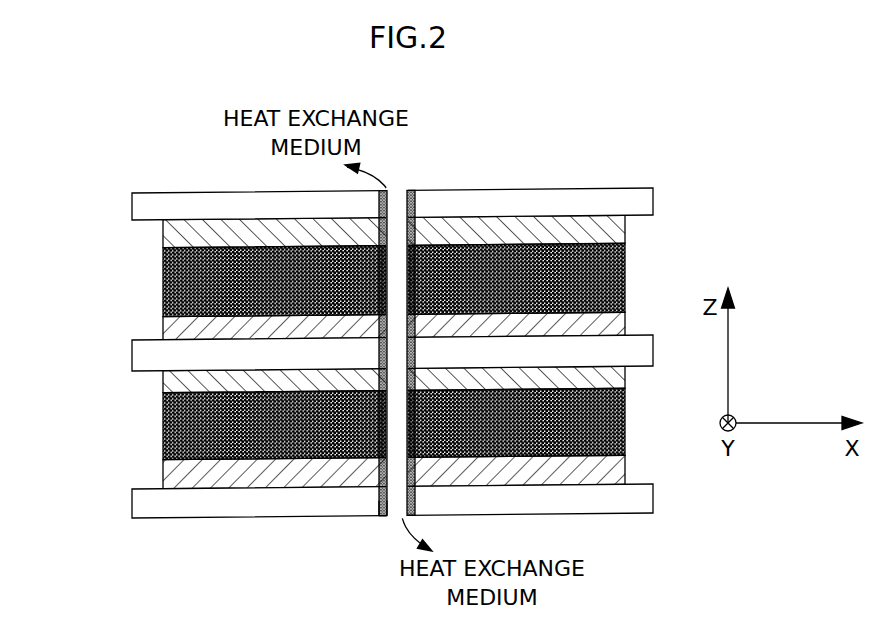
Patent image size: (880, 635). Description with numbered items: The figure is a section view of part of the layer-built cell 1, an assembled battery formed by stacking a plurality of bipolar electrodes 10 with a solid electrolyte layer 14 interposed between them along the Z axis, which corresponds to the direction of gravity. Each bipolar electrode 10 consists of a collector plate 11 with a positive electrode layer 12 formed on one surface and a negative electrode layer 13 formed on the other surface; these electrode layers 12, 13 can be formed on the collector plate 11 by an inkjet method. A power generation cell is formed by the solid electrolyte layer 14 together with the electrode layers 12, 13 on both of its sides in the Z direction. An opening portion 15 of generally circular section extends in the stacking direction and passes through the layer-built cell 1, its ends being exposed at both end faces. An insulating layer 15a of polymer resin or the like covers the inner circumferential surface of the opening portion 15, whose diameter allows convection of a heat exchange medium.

The layer-built cell 1 is at (180, 176).
The bipolar electrode 10 is at (65, 293).
The collector plate 11 is at (608, 201).
The positive electrode layer 12 is at (164, 322).
The negative electrode layer 13 is at (620, 229).
The solid electrolyte layer 14 is at (161, 283).
The opening portion 15 is at (398, 190).
The insulating layer 15a is at (389, 503).